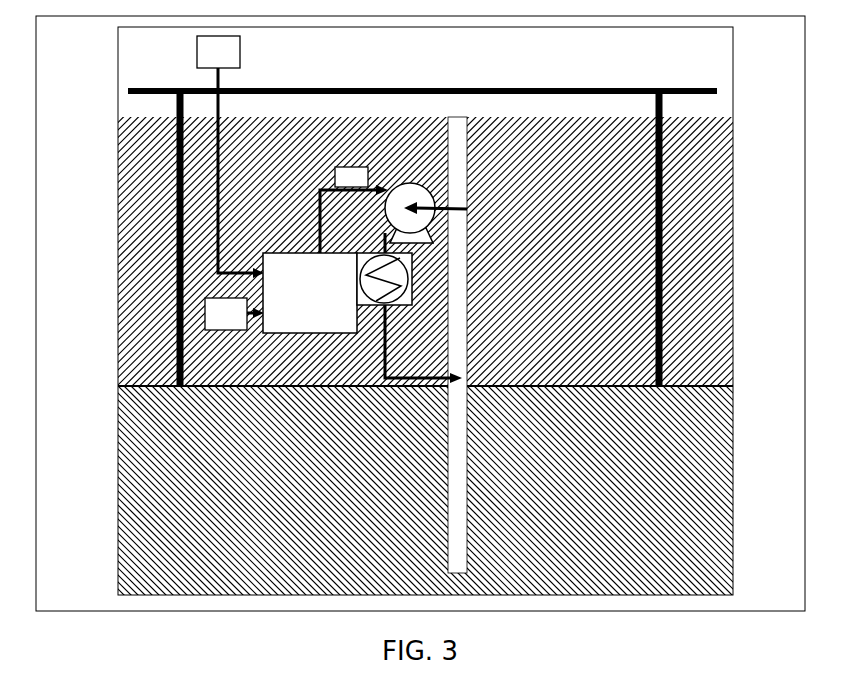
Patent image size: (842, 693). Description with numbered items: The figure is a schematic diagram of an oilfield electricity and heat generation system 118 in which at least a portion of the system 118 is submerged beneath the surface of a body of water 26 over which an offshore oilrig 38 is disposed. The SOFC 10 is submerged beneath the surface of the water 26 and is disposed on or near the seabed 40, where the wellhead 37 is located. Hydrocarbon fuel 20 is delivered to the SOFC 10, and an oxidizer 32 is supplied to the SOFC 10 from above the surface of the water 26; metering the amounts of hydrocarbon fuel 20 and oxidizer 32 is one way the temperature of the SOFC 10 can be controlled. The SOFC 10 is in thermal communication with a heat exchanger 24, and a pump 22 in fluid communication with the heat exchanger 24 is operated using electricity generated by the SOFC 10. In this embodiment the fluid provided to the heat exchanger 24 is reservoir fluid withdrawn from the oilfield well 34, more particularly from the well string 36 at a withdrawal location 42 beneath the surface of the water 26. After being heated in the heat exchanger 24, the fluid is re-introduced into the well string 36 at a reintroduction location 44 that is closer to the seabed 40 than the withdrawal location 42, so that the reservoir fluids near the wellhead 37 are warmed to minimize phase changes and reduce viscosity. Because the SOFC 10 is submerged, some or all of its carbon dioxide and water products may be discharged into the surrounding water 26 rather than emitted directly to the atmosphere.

The SOFC 10 is at (310, 293).
The hydrocarbon fuel 20 is at (234, 314).
The pump 22 is at (408, 193).
The heat exchanger 24 is at (410, 306).
The water 26 is at (707, 222).
The oxidizer 32 is at (218, 52).
The oilfield well 34 is at (455, 473).
The well string 36 is at (464, 273).
The wellhead 37 is at (473, 378).
The offshore oilrig 38 is at (633, 88).
The seabed 40 is at (683, 430).
The withdrawal location 42 is at (467, 210).
The reintroduction location 44 is at (476, 367).
The oilfield electricity and heat generation system 118 is at (196, 263).